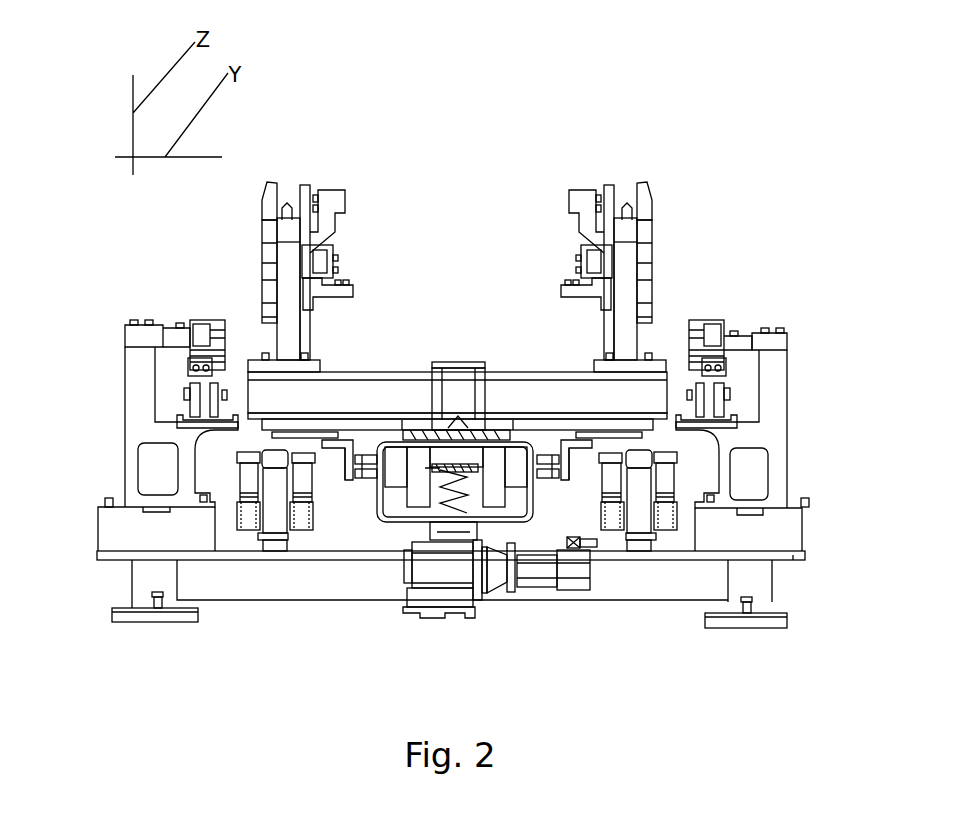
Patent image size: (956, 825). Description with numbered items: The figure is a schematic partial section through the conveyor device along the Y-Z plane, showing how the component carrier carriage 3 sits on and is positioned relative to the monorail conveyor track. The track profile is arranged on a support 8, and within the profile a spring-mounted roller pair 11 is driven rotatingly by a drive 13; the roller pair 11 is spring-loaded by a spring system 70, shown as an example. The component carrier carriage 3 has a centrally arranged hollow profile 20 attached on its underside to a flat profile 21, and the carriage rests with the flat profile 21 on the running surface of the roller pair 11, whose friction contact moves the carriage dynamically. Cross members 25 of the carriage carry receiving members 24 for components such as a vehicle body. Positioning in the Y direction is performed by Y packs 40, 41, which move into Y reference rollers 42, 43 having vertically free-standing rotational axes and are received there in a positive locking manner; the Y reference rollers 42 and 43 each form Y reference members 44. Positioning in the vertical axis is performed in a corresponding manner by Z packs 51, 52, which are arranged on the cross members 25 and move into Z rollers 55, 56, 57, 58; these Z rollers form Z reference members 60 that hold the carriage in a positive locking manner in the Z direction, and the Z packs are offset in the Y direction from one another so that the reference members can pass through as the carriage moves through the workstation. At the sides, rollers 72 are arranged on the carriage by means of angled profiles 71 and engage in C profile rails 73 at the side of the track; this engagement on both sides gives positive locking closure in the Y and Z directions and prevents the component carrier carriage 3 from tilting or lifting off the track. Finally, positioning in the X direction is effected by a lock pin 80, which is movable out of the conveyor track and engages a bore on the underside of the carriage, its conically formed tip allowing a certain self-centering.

The component carrier carriage 3 is at (466, 348).
The support 8 is at (765, 575).
The roller pair 11 is at (437, 588).
The drive 13 is at (486, 580).
The hollow profile 20 is at (444, 366).
The flat profile 21 is at (420, 432).
The receiving member 24 is at (285, 165).
The cross member 25 is at (500, 393).
The Y pack 40 is at (636, 542).
The Y pack 41 is at (247, 462).
The Y reference roller 42 is at (602, 462).
The Y reference roller 43 is at (245, 458).
The Y reference member 44 is at (225, 461).
The Z pack 51 is at (735, 372).
The Z pack 52 is at (175, 372).
The Z roller 55 is at (715, 399).
The Z roller 56 is at (690, 388).
The Z roller 57 is at (237, 363).
The Z roller 58 is at (193, 396).
The Z reference member 60 is at (714, 315).
The spring system 70 is at (455, 522).
The angled profile 71 is at (348, 463).
The roller 72 is at (358, 480).
The C profile rail 73 is at (372, 447).
The lock pin 80 is at (449, 370).